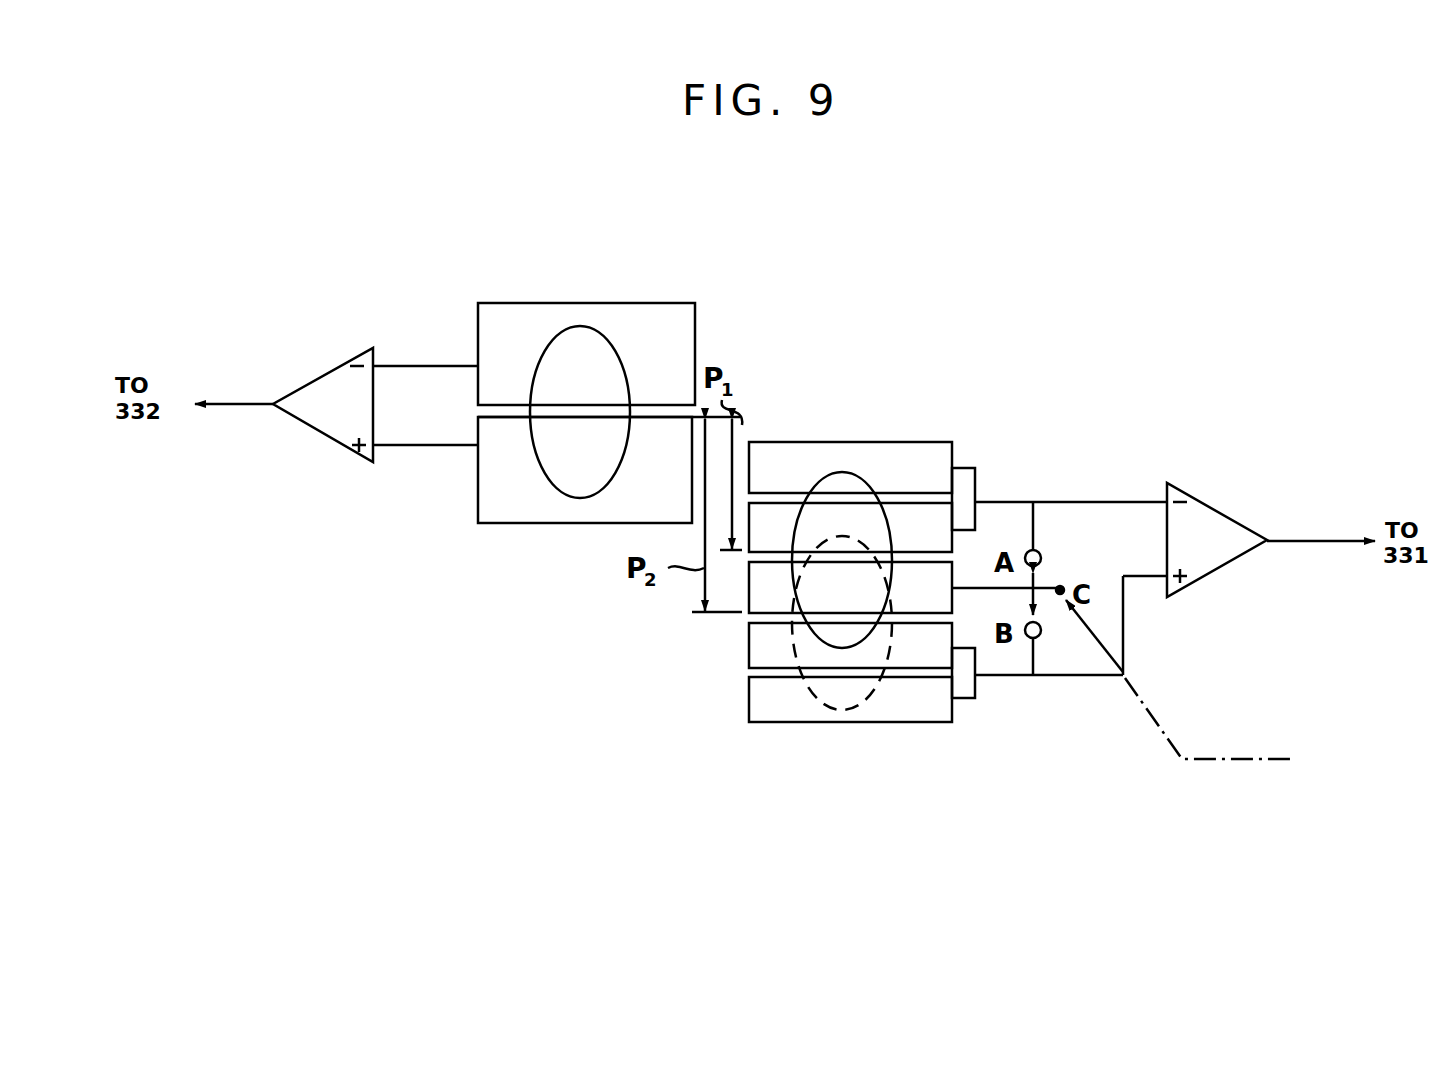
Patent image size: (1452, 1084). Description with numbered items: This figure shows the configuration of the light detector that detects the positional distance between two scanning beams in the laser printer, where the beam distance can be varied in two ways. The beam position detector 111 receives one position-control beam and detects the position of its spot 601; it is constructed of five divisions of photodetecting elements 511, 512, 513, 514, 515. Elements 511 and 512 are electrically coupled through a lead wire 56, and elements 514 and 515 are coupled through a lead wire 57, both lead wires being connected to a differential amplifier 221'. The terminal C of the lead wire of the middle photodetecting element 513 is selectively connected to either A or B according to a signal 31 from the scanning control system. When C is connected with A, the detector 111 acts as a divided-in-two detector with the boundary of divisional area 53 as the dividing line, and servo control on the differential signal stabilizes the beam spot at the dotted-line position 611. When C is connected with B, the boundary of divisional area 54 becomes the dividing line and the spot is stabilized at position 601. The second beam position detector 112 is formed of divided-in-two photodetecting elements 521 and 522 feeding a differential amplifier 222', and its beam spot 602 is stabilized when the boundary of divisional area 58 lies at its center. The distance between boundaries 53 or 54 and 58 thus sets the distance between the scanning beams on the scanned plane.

The beam position detector 112 is at (500, 303).
The photodetecting element 521 is at (588, 308).
The photodetecting element 522 is at (478, 512).
The beam spot 602 is at (617, 350).
The boundary of divisional area 58 is at (658, 420).
The differential amplifier 222' is at (336, 379).
The differential amplifier 221' is at (1271, 521).
The beam position detector 111 is at (884, 442).
The photodetecting element 511 is at (908, 445).
The photodetecting element 512 is at (772, 508).
The photodetecting element 513 is at (752, 600).
The photodetecting element 514 is at (752, 667).
The photodetecting element 515 is at (752, 722).
The beam spot 601 is at (845, 472).
The beam spot position 611 is at (810, 700).
The boundary of divisional area 54 is at (938, 530).
The boundary of divisional area 53 is at (944, 622).
The lead wire 56 is at (975, 480).
The lead wire 57 is at (975, 695).
The signal 31 is at (1272, 760).